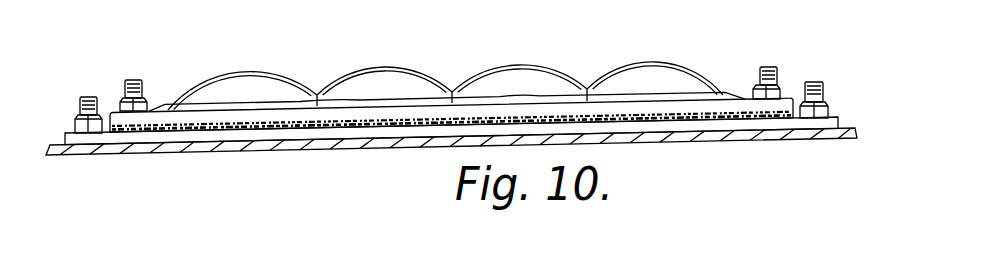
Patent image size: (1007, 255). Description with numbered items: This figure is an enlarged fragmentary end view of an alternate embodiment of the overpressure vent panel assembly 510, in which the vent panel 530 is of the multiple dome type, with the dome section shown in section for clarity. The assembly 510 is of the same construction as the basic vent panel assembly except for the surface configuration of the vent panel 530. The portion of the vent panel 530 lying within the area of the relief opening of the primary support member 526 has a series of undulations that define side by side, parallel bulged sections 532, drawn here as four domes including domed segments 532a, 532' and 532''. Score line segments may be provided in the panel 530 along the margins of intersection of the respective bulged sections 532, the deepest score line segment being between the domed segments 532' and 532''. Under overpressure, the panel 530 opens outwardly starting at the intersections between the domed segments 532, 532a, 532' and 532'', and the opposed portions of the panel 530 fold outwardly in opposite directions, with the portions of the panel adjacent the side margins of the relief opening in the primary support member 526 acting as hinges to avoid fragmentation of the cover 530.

The vent panel assembly 510 is at (845, 112).
The primary support member 526 is at (720, 106).
The vent panel 530 is at (444, 68).
The domed segment 532a is at (228, 74).
The domed segment 532' is at (404, 61).
The domed segment 532'' is at (524, 58).
The bulged section 532 is at (655, 59).